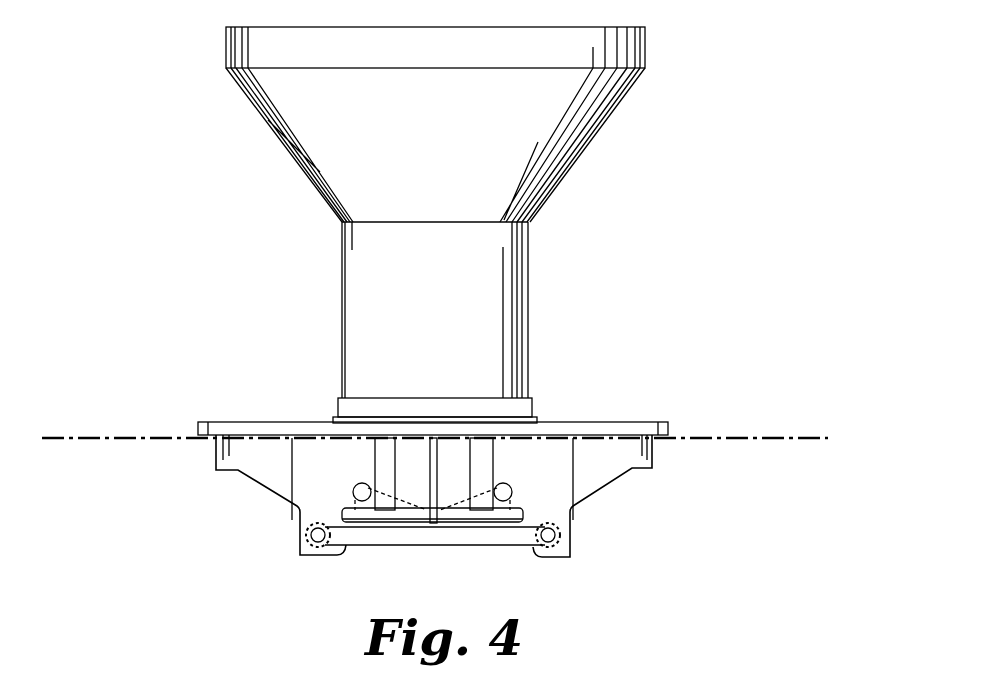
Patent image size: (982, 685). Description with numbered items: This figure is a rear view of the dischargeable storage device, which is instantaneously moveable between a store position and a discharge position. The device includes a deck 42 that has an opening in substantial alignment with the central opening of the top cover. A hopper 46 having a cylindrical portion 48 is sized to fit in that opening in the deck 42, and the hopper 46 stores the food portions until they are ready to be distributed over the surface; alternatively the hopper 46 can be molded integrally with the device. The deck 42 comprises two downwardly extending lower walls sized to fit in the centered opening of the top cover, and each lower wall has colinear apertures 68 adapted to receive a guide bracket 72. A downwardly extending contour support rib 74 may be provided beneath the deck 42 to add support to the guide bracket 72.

The deck 42 is at (622, 422).
The hopper 46 is at (565, 135).
The cylindrical portion 48 is at (487, 290).
The colinear apertures 68 is at (290, 525).
The guide bracket 72 is at (485, 535).
The contour support rib 74 is at (435, 498).